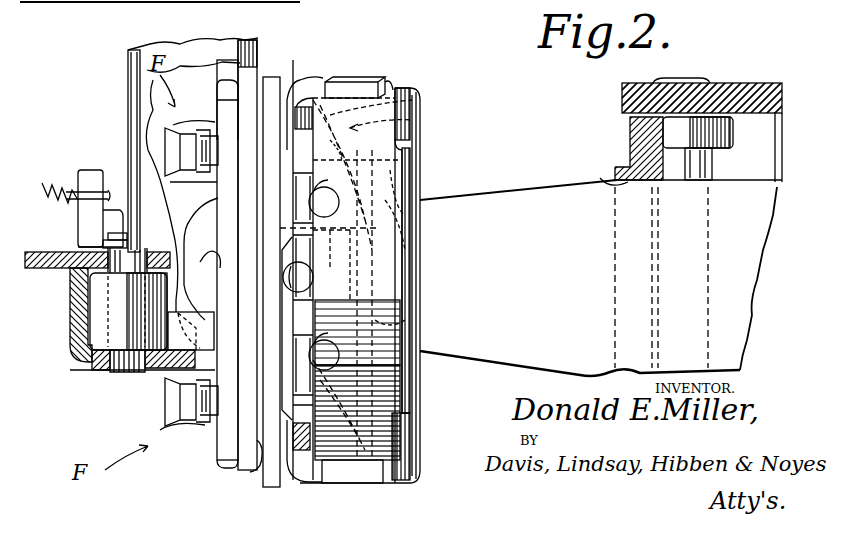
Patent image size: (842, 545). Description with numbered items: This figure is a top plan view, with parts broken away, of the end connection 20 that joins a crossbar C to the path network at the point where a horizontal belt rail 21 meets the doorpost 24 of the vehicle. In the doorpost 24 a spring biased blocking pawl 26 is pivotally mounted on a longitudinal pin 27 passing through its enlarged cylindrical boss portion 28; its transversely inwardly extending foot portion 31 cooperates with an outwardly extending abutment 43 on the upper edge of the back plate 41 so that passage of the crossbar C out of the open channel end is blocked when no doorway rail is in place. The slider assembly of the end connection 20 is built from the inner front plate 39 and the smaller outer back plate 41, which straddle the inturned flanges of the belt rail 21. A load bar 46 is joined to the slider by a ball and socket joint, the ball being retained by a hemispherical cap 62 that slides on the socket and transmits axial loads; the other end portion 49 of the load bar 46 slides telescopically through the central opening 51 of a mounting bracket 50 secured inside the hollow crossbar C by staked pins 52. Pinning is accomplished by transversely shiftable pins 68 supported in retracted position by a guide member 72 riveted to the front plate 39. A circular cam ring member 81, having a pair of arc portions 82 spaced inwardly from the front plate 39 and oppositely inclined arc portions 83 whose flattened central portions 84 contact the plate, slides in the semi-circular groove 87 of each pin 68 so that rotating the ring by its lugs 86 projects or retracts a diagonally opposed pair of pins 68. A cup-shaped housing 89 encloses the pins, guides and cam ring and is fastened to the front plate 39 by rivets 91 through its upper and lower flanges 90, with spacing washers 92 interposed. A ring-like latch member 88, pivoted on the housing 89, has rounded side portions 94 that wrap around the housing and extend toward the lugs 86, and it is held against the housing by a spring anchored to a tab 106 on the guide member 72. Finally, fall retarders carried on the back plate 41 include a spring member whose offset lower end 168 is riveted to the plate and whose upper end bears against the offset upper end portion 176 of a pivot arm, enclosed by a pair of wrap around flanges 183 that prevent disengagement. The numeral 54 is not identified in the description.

The end connection 20 is at (440, 66).
The horizontal belt rail 21 is at (128, 77).
The doorpost 24 is at (87, 372).
The blocking pawl 26 is at (80, 305).
The longitudinal pin 27 is at (128, 376).
The cylindrical boss portion 28 is at (100, 318).
The foot portion 31 is at (203, 335).
The front plate 39 is at (267, 484).
The back plate 41 is at (217, 457).
The abutment 43 is at (227, 284).
The load bar 46 is at (538, 180).
The load bar end portion 49 is at (735, 320).
The mounting bracket 50 is at (733, 132).
The central opening 51 is at (615, 178).
The pins 52 is at (710, 165).
The bracket 54 is at (247, 210).
The cap 62 is at (203, 220).
The pins 68 is at (387, 182).
The guide member 72 is at (304, 25).
The cam ring member 81 is at (418, 123).
The arc portions 82 is at (366, 274).
The inclined arc portions 83 is at (418, 103).
The flattened central portion 84 is at (290, 95).
The lugs 86 is at (352, 86).
The semi-circular groove 87 is at (405, 246).
The latch member 88 is at (422, 165).
The housing 89 is at (392, 85).
The flanges 90 is at (352, 8).
The rivets 91 is at (338, 213).
The spacing washers 92 is at (420, 383).
The rounded side portions 94 is at (401, 86).
The tab 106 is at (310, 261).
The offset lower end 168 is at (250, 468).
The offset upper end portion 176 is at (202, 130).
The wrap around flanges 183 is at (173, 125).
The crossbar C is at (749, 74).